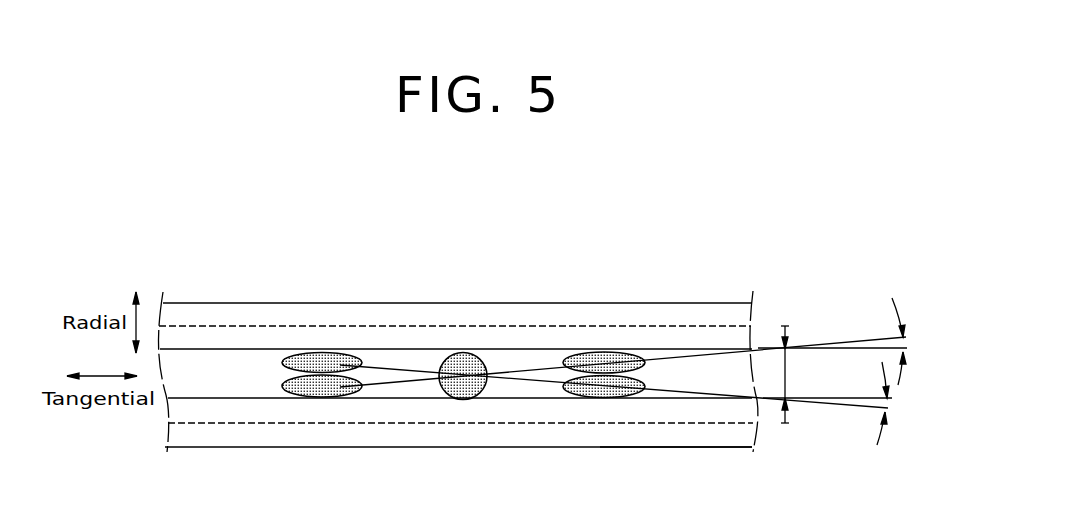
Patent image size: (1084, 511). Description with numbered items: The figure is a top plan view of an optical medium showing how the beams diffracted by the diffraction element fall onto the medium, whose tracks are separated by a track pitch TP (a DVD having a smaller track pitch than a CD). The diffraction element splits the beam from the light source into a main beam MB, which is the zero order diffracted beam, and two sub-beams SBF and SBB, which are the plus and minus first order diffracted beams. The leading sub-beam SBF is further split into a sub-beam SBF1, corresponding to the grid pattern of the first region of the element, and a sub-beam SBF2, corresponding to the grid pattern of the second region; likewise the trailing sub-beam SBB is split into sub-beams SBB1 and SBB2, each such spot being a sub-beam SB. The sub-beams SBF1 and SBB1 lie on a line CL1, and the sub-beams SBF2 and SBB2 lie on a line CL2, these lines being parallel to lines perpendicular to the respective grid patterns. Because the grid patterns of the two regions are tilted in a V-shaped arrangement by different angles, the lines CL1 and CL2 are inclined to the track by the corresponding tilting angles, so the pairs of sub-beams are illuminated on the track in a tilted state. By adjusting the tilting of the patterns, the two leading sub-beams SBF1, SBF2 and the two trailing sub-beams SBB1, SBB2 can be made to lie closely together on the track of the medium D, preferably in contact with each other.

The main beam MB is at (459, 356).
The sub-beam SB is at (339, 341).
The leading sub-beam SBF is at (303, 295).
The sub-beam SBF1 is at (318, 363).
The sub-beam SBF2 is at (295, 382).
The trailing sub-beam SBB is at (588, 295).
The sub-beam SBB1 is at (580, 380).
The sub-beam SBB2 is at (600, 355).
The track pitch TP is at (798, 374).
The line CL1 is at (636, 394).
The line CL2 is at (641, 355).
The disc D is at (735, 448).